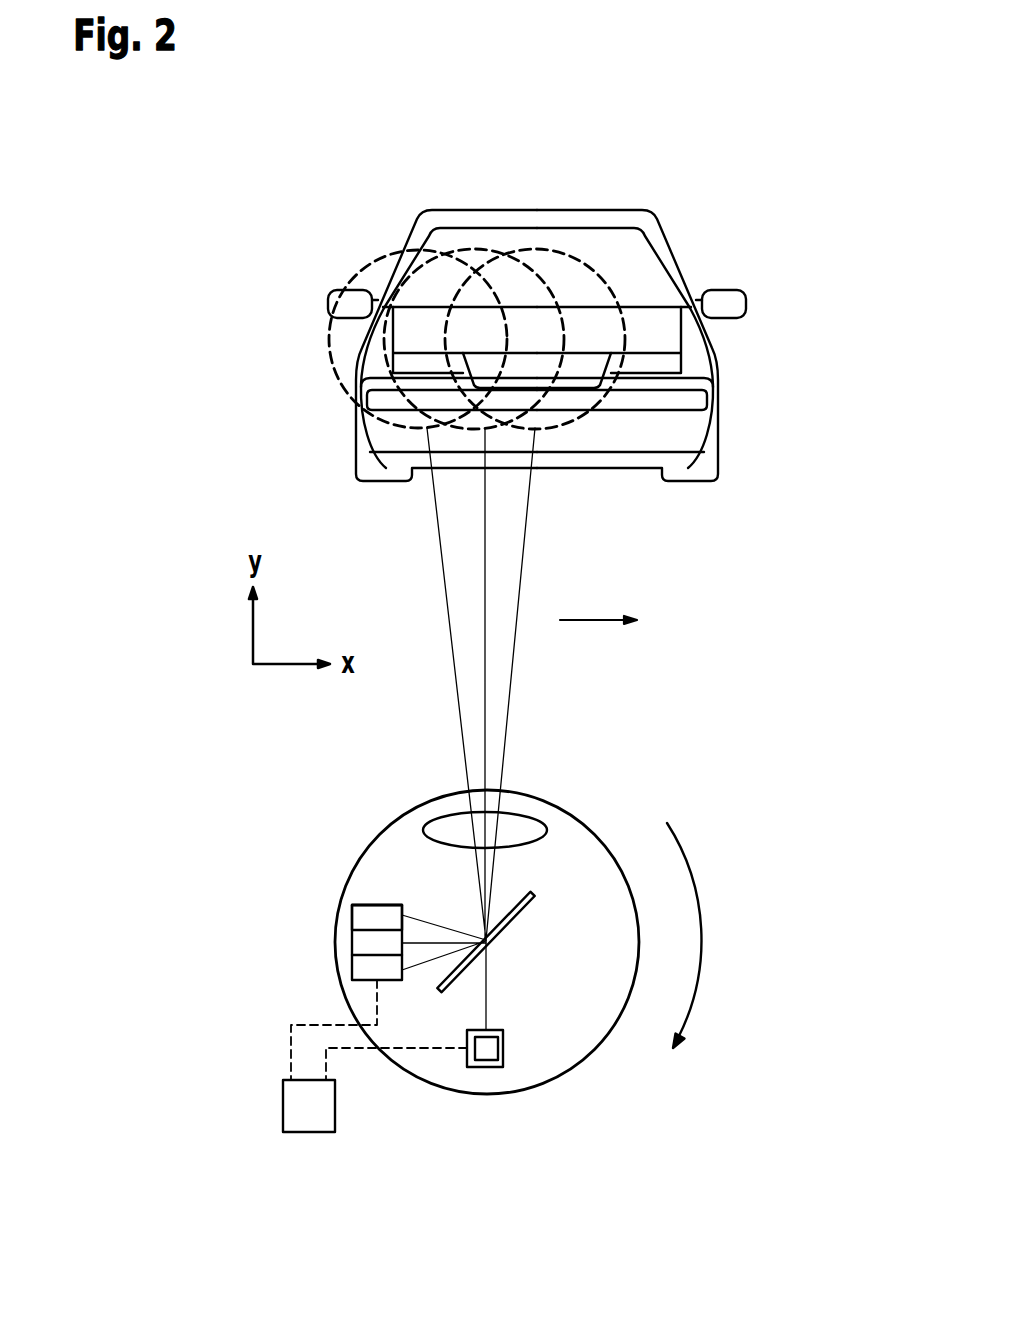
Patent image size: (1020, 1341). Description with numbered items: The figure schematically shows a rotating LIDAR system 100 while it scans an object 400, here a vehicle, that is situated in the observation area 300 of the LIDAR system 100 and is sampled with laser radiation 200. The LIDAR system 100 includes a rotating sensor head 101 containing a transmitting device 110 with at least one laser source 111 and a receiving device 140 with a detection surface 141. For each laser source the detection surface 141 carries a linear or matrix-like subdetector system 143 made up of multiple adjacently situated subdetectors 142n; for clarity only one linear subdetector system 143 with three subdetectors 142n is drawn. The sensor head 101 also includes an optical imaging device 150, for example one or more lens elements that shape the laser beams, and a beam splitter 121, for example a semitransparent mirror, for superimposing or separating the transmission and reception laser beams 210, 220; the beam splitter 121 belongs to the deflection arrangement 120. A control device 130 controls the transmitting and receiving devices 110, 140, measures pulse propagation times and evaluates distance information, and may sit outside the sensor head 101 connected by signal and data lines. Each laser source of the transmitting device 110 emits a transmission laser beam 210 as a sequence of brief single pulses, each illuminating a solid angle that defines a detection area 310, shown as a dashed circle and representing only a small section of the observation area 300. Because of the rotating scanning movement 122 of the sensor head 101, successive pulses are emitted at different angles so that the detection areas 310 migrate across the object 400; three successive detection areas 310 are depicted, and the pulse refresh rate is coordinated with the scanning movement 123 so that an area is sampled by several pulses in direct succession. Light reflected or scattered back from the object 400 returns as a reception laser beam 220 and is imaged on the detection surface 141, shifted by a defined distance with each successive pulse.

The LIDAR system 100 is at (553, 1138).
The rotating sensor head 101 is at (414, 1077).
The transmitting device 110 is at (489, 1068).
The laser source 111 is at (498, 1051).
The deflection unit 120 is at (573, 1017).
The beam splitter 121 is at (533, 897).
The scanning movement 122 is at (702, 933).
The scanning movement 123 is at (591, 620).
The control device 130 is at (283, 1106).
The receiving device 140 is at (320, 963).
The detection surface 141 is at (356, 889).
The subdetector 142n is at (360, 918).
The subdetector system 143 is at (395, 897).
The optical imaging device 150 is at (440, 813).
The laser radiation 200 is at (547, 697).
The transmission laser beam 210 is at (487, 1000).
The reception laser beam 220 is at (408, 905).
The observation area 300 is at (238, 382).
The detection area 310 is at (352, 272).
The object 400 is at (612, 210).